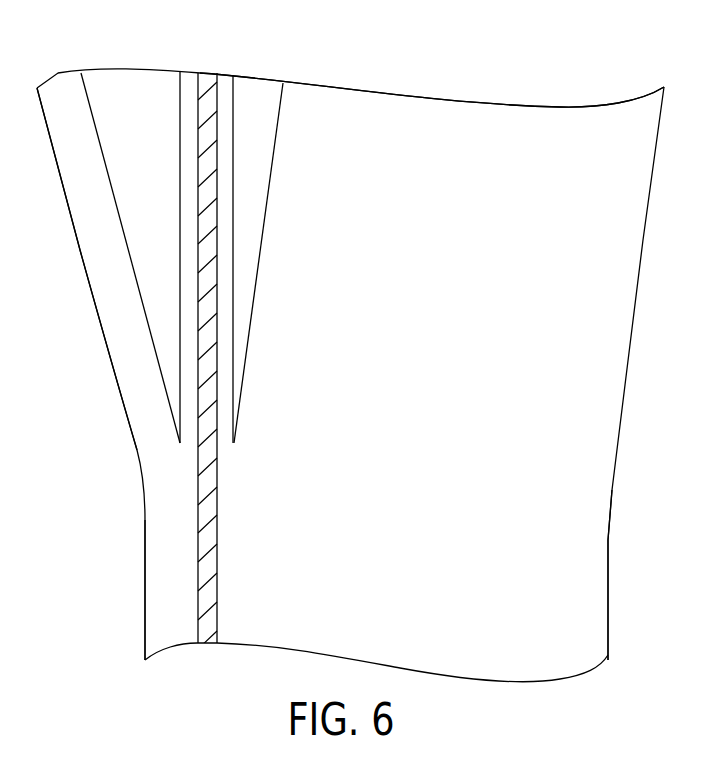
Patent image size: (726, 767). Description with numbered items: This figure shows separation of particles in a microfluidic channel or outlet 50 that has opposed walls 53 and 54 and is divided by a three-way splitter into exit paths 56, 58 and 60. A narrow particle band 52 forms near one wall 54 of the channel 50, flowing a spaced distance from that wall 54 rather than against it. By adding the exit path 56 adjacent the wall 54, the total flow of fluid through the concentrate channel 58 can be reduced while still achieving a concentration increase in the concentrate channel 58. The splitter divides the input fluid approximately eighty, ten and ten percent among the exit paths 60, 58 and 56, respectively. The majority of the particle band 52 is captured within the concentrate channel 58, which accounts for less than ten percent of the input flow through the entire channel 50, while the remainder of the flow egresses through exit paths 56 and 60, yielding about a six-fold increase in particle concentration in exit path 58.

The microfluidic channel 50 is at (627, 602).
The particle band 52 is at (218, 564).
The wall 53 is at (608, 560).
The wall 54 is at (144, 609).
The exit path 56 is at (68, 210).
The concentrate channel 58 is at (187, 72).
The exit path 60 is at (482, 103).